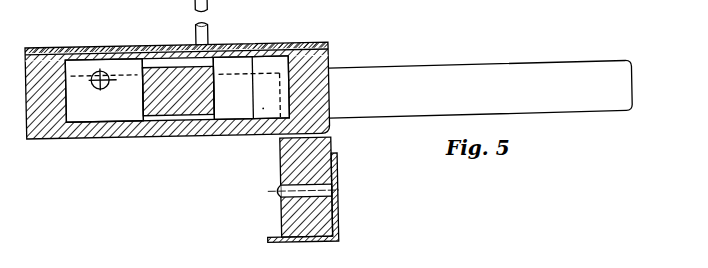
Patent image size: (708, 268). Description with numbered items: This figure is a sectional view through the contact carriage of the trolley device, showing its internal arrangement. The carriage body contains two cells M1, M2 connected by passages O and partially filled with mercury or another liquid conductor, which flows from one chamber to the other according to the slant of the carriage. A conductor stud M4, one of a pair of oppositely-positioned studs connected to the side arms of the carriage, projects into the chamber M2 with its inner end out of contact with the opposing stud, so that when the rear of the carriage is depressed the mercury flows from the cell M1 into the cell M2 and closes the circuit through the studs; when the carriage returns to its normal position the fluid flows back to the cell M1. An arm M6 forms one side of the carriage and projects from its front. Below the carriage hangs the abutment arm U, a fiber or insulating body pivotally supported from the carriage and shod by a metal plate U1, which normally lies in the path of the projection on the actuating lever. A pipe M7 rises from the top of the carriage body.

The cell M1 is at (251, 87).
The cell M2 is at (104, 90).
The conductor stud M4 is at (106, 87).
The arm M6 is at (418, 71).
The pipe M7 is at (210, 34).
The passage O is at (163, 118).
The abutment arm U is at (278, 171).
The metal plate U1 is at (298, 247).